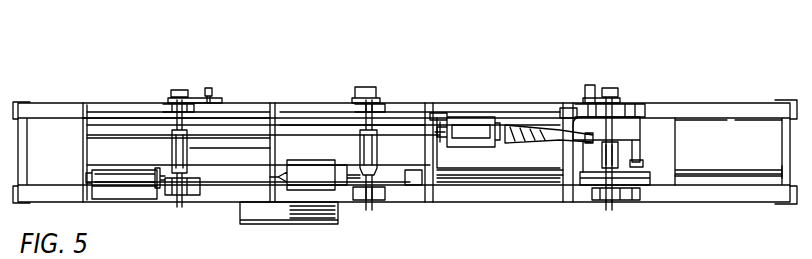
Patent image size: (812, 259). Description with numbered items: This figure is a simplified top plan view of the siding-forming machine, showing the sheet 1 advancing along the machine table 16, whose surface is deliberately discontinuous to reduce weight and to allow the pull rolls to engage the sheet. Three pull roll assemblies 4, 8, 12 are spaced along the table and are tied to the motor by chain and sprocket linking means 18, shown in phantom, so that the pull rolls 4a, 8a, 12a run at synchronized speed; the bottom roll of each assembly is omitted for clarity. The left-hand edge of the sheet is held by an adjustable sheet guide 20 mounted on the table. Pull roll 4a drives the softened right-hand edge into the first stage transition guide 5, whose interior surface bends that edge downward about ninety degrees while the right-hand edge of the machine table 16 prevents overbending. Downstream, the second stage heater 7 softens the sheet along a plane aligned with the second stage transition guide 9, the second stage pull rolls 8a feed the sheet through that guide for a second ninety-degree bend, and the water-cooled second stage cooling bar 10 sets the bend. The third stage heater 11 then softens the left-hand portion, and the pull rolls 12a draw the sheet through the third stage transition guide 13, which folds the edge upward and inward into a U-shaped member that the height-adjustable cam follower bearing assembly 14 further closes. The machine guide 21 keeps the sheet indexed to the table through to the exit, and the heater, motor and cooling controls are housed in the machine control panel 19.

The sheet 1 is at (797, 211).
The pull roll assembly 4 is at (188, 96).
The pull roll 4a is at (190, 148).
The first stage transition guide 5 is at (163, 203).
The second stage heater 7 is at (135, 230).
The pull roll assembly 8 is at (181, 233).
The second stage pull rolls 8a is at (360, 137).
The second stage transition guide 9 is at (387, 173).
The second stage cooling bar 10 is at (470, 177).
The third stage heater 11 is at (470, 123).
The pull roll assembly 12 is at (609, 88).
The pull rolls 12a is at (602, 155).
The third stage transition guide 13 is at (513, 127).
The cam follower bearing assembly 14 is at (570, 118).
The machine table 16 is at (235, 130).
The chain and sprocket linking means 18 is at (210, 99).
The machine control panel 19 is at (305, 228).
The sheet guide 20 is at (403, 120).
The machine guide 21 is at (725, 174).